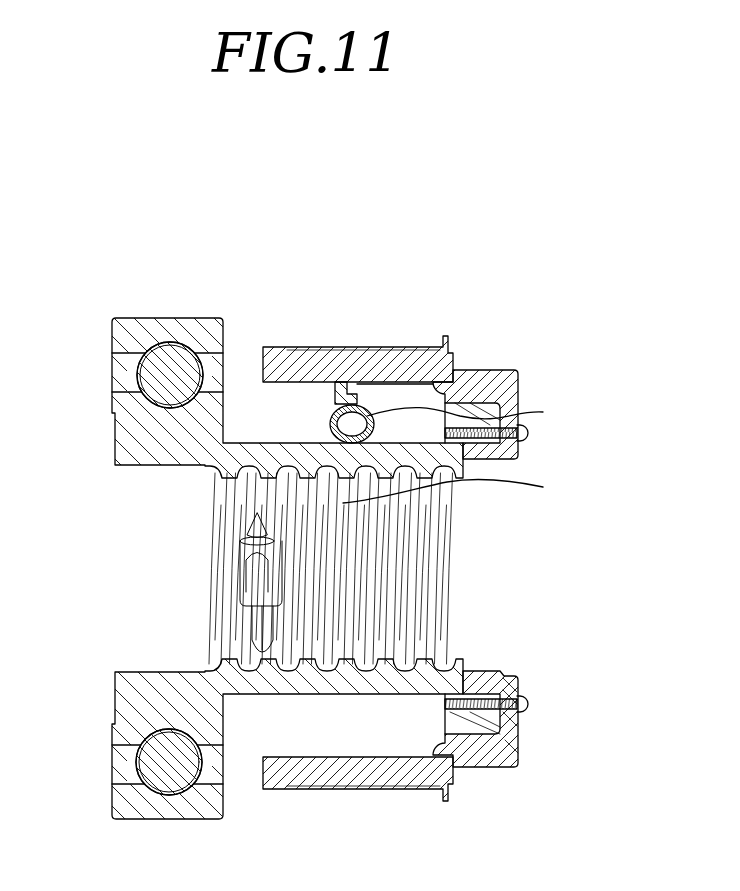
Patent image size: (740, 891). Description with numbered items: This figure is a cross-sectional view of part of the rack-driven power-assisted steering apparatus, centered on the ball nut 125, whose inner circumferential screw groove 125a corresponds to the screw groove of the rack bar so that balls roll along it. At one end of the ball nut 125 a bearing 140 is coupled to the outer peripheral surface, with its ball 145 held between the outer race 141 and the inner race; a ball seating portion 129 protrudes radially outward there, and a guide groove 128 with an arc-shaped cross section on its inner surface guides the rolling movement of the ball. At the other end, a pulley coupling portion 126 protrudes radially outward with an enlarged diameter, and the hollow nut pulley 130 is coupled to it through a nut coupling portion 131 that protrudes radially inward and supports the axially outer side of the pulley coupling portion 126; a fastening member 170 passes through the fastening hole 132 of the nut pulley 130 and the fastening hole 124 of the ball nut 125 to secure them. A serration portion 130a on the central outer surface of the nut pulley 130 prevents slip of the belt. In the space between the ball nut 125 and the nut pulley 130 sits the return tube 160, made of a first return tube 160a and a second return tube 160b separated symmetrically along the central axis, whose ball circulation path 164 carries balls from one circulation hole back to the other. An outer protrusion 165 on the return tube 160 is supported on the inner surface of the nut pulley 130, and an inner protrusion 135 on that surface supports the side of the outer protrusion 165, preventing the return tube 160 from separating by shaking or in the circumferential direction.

The fastening hole 124 is at (472, 720).
The ball nut 125 is at (300, 688).
The inner circumferential screw groove 125a is at (387, 558).
The pulley coupling portion 126 is at (482, 680).
The guide groove 128 is at (167, 410).
The ball seating portion 129 is at (122, 700).
The nut pulley 130 is at (415, 352).
The serration portion 130a is at (315, 347).
The nut coupling portion 131 is at (518, 690).
The fastening hole 132 is at (518, 737).
The inner protrusion 135 is at (372, 387).
The bearing 140 is at (167, 810).
The outer race 141 is at (147, 325).
The ball 145 is at (172, 368).
The return tube 160 is at (600, 412).
The first return tube 160a is at (466, 489).
The second return tube 160b is at (478, 412).
The ball circulation path 164 is at (340, 407).
The outer protrusion 165 is at (361, 426).
The fastening member 170 is at (527, 703).